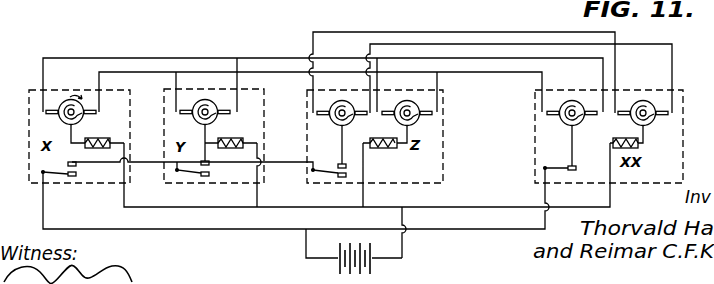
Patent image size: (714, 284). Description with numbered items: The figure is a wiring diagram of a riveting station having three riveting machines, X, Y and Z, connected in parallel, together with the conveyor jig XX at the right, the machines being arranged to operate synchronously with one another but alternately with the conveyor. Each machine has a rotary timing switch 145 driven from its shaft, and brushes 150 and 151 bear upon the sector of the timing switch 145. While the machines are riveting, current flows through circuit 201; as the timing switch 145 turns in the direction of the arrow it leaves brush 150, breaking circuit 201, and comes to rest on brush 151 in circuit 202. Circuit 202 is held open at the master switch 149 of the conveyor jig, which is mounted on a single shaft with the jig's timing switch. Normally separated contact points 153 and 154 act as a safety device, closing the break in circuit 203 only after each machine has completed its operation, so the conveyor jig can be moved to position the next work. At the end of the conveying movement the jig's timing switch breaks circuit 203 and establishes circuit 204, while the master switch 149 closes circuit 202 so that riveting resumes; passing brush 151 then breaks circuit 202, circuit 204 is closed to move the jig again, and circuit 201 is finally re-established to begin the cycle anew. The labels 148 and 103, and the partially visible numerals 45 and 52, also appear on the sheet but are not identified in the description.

The rotary timing switch 145 is at (68, 95).
The brush 150 is at (52, 115).
The brush 151 is at (93, 115).
The contact point 153 is at (67, 164).
The contact point 154 is at (72, 178).
The rotary contact drum at station Z 148 is at (333, 135).
The master switch 149 is at (562, 136).
The conductor 103 is at (192, 159).
The circuit 201 is at (326, 127).
The circuit 202 is at (296, 150).
The circuit 203 is at (362, 131).
The circuit 204 is at (383, 139).
The reference from adjacent figure 45 is at (389, 6).
The reference from adjacent figure 52 is at (472, 5).